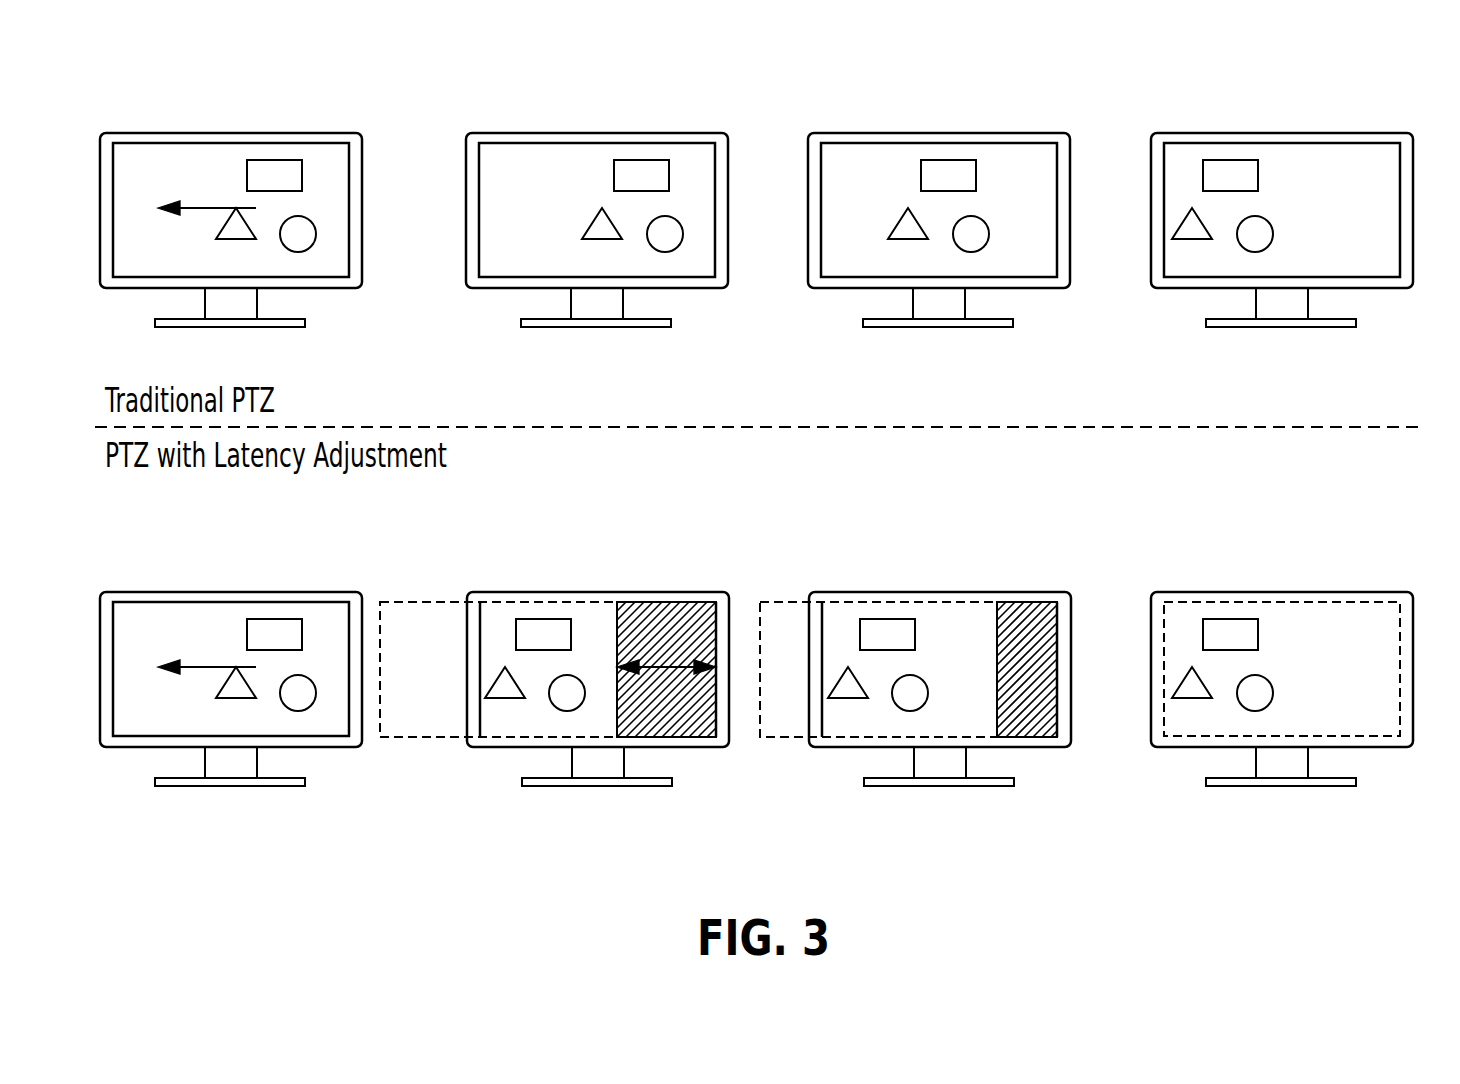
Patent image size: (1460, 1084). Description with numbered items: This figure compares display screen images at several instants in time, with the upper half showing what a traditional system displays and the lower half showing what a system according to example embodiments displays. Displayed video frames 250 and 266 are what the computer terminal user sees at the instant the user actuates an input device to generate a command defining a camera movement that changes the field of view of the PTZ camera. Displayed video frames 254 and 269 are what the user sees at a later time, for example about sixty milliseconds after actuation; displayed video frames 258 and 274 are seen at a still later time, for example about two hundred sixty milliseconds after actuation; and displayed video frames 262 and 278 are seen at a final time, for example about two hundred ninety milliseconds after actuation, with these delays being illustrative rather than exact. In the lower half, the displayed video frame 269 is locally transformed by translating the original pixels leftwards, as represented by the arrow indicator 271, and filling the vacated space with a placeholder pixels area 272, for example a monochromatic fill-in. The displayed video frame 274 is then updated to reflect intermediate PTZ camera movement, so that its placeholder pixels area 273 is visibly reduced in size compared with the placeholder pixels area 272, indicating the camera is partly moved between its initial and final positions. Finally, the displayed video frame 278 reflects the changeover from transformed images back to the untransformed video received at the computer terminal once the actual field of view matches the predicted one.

The displayed video frame 250 is at (341, 92).
The displayed video frame 254 is at (709, 92).
The displayed video frame 258 is at (1056, 92).
The displayed video frame 262 is at (1401, 92).
The displayed video frame 266 is at (341, 552).
The displayed video frame 269 is at (709, 552).
The arrow indicator 271 is at (190, 664).
The placeholder pixels area 272 is at (688, 718).
The placeholder pixels area 273 is at (1032, 718).
The displayed video frame 274 is at (1056, 552).
The displayed video frame 278 is at (1401, 552).